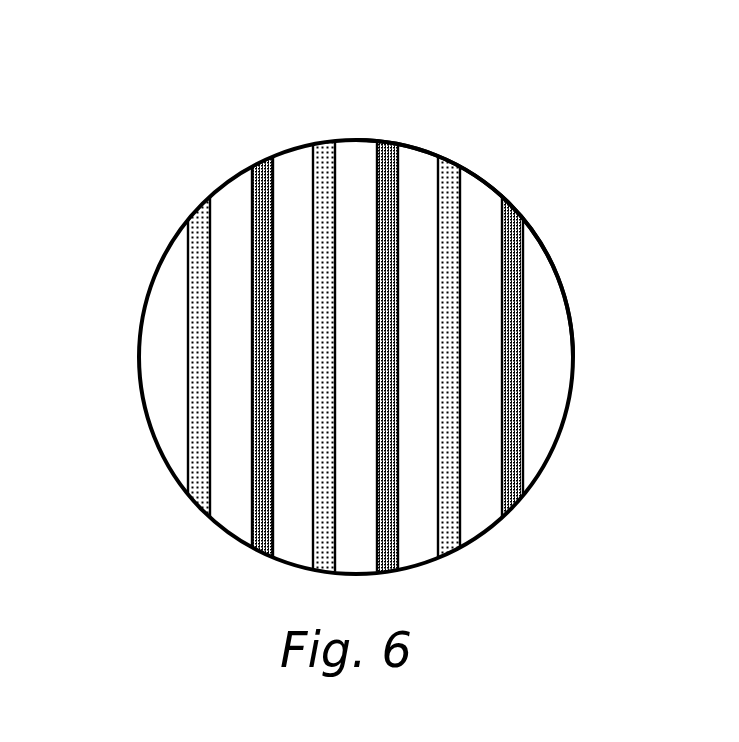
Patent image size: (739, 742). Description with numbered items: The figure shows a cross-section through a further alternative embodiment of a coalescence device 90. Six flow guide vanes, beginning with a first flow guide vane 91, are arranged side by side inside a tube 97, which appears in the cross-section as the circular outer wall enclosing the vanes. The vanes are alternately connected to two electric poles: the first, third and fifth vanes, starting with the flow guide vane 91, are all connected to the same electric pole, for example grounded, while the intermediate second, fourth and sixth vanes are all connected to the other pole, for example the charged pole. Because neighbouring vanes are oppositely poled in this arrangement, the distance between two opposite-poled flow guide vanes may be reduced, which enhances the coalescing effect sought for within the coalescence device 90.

The coalescence device 90 is at (121, 167).
The flow guide vane 91 is at (199, 218).
The tube 97 is at (575, 357).